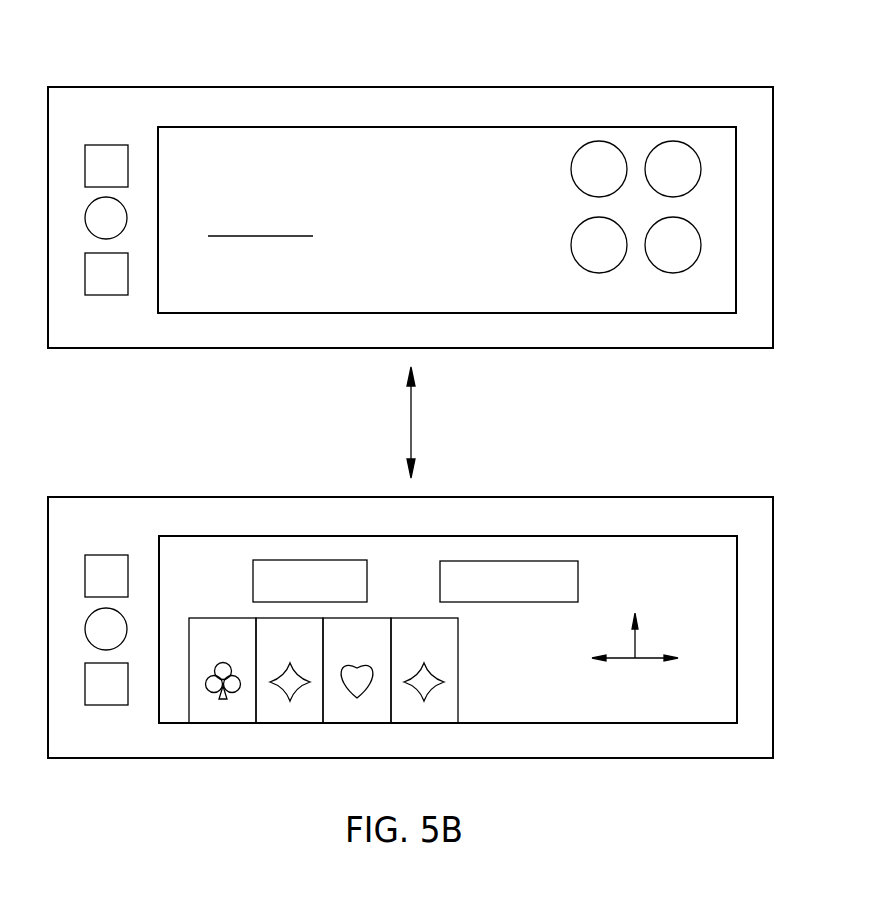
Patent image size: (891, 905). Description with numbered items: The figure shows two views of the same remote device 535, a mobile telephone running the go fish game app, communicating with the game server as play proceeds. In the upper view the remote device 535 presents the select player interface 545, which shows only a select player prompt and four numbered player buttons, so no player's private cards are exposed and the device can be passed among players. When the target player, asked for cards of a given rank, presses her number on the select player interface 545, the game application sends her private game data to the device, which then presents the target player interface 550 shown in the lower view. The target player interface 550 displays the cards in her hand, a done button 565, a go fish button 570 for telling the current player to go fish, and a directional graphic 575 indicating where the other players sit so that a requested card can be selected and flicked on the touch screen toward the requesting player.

The remote device 535 is at (365, 87).
The select player interface 545 is at (558, 313).
The target player interface 550 is at (520, 579).
The done button 565 is at (323, 560).
The go fish button 570 is at (507, 561).
The directional graphic 575 is at (640, 660).